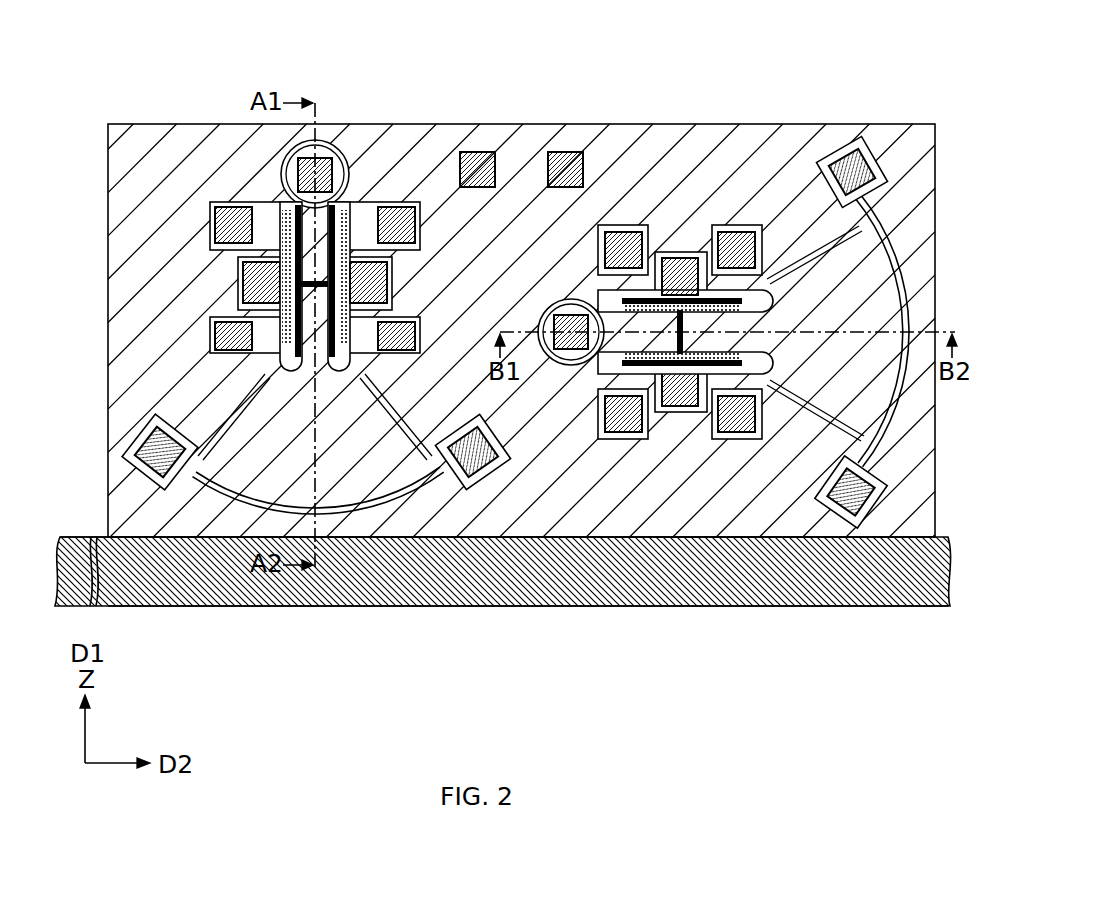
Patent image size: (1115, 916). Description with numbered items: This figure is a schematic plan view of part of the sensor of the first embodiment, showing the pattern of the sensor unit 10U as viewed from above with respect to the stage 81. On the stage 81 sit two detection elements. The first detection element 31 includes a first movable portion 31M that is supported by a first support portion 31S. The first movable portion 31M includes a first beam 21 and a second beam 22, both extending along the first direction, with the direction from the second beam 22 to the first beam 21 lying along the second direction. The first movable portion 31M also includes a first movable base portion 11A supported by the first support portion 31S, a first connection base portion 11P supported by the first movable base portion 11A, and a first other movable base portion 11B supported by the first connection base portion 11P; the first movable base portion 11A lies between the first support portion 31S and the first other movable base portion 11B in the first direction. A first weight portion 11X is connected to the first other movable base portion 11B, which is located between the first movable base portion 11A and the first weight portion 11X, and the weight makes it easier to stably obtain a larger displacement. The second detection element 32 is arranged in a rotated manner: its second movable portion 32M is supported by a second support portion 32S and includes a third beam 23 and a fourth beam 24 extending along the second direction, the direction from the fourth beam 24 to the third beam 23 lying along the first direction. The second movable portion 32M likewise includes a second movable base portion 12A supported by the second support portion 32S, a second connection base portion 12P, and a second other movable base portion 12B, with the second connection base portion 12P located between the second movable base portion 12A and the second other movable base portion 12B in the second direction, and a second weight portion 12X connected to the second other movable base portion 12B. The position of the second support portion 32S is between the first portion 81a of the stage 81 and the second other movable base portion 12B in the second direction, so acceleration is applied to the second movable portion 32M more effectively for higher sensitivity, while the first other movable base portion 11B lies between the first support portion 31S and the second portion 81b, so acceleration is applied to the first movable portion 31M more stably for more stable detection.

The ultrasonic device unit 10U is at (888, 82).
The first detection element 31 is at (279, 358).
The first support portion 31S is at (293, 178).
The first movable portion 31M is at (332, 210).
The second detection element 32 is at (723, 374).
The second support portion 32S is at (571, 352).
The second movable portion 32M is at (608, 327).
The first movable base portion 11A is at (300, 238).
The first connection base portion 11P is at (290, 262).
The first other movable base portion 11B is at (298, 315).
The first weight portion 11X is at (282, 418).
The first beam 21 is at (333, 212).
The second beam 22 is at (330, 283).
The third beam 23 is at (676, 327).
The fourth beam 24 is at (676, 330).
The second movable base portion 12A is at (626, 365).
The second connection base portion 12P is at (668, 345).
The second other movable base portion 12B is at (706, 342).
The second weight portion 12X is at (822, 345).
The stage 81 is at (195, 572).
The first portion 81a is at (72, 562).
The second portion 81b is at (522, 572).